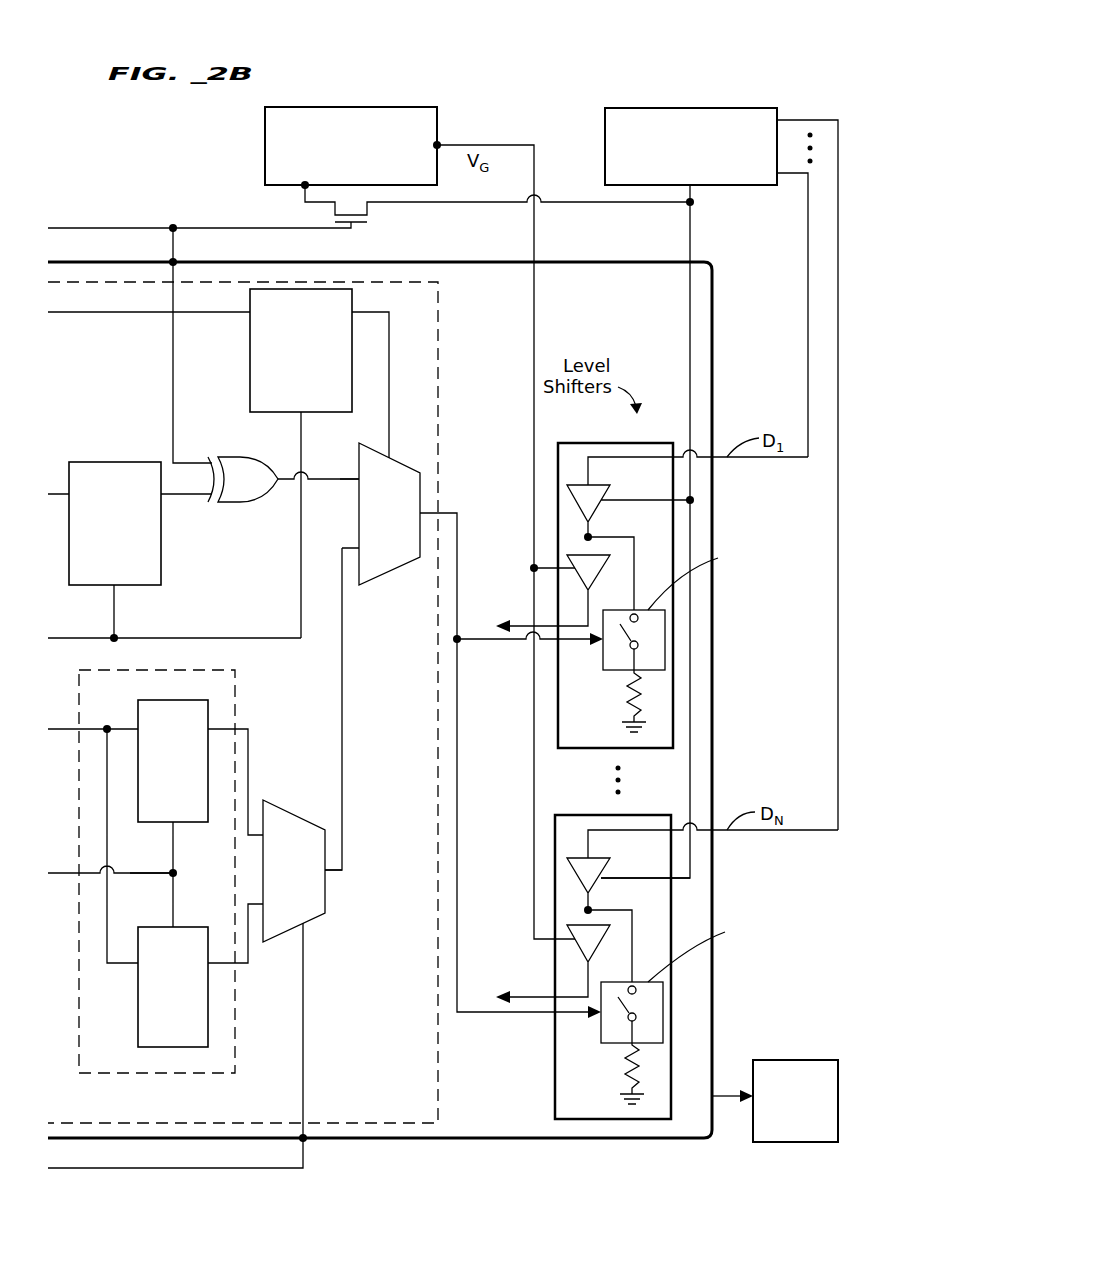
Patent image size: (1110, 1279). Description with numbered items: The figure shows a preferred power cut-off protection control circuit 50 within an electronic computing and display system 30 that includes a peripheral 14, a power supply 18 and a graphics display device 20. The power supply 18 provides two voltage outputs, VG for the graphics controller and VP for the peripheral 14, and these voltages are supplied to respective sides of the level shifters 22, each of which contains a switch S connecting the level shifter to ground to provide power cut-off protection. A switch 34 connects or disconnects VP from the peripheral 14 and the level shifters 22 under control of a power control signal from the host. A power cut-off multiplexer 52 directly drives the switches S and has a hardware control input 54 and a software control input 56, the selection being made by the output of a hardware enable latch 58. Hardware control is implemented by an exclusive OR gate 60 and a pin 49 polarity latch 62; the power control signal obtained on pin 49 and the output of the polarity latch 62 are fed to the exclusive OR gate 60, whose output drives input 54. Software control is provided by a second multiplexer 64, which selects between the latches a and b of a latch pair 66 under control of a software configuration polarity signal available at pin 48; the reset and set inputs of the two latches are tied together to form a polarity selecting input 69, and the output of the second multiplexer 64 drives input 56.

The electronic computing and display system 30 is at (741, 44).
The power cut-off protection control circuit 50 is at (243, 702).
The power supply 18 is at (353, 148).
The switch 34 is at (305, 213).
The pin 49 is at (170, 258).
The hardware enable latch 58 is at (218, 465).
The exclusive OR gate 60 is at (283, 479).
The pin 49 polarity latch 62 is at (130, 550).
The power cut-off multiplexer 52 is at (421, 487).
The hardware control input 54 is at (350, 478).
The software control input 56 is at (352, 547).
The latch pair 66 is at (155, 871).
The polarity selecting input 69 is at (170, 870).
The second multiplexer 64 is at (310, 922).
The pin 48 is at (306, 1141).
The peripheral 14 is at (719, 493).
The level shifters 22 is at (555, 677).
The graphics display device 20 is at (775, 1101).